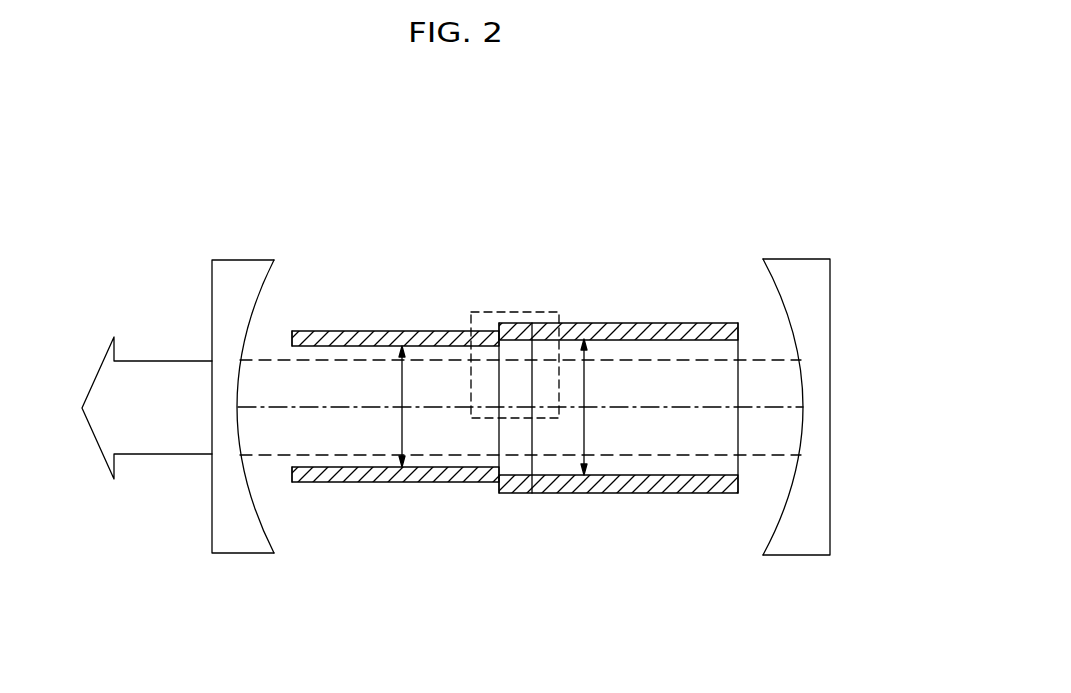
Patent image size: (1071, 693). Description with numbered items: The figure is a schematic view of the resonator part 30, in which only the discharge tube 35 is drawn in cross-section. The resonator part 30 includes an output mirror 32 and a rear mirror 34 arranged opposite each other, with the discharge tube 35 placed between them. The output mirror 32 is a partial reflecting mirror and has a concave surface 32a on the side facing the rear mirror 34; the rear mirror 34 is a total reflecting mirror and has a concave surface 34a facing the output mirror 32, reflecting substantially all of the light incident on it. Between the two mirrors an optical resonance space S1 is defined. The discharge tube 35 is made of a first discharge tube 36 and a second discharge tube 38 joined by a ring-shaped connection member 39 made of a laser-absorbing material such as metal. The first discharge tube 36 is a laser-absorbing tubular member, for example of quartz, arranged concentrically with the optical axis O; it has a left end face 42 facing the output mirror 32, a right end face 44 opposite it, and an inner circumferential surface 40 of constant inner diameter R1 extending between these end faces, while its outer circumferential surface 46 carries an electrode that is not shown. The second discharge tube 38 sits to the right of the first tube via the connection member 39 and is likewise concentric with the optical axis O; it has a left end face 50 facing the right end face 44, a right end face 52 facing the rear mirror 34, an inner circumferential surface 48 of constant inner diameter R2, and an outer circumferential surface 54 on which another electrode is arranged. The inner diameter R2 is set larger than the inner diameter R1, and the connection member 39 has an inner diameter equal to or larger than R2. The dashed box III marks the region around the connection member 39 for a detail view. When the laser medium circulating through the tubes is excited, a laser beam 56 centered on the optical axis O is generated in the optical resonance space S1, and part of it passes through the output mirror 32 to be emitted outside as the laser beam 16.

The laser beam 16 is at (150, 360).
The resonator part 30 is at (745, 114).
The output mirror 32 is at (240, 259).
The concave surface 32a is at (270, 287).
The rear mirror 34 is at (803, 258).
The concave surface 34a is at (770, 284).
The discharge tube 35 is at (487, 216).
The first discharge tube 36 is at (393, 384).
The second discharge tube 38 is at (613, 365).
The connection member 39 is at (511, 331).
The inner circumferential surface 40 is at (431, 347).
The left end face 42 is at (292, 483).
The right end face 44 is at (500, 430).
The outer circumferential surface 46 is at (358, 483).
The inner circumferential surface 48 is at (660, 344).
The left end face 50 is at (527, 483).
The right end face 52 is at (738, 494).
The outer circumferential surface 54 is at (672, 494).
The laser beam 56 is at (276, 358).
The inner diameter R1 is at (403, 430).
The inner diameter R2 is at (585, 430).
The optical resonance space S1 is at (281, 391).
The optical axis O is at (754, 409).
The detail region III is at (549, 310).